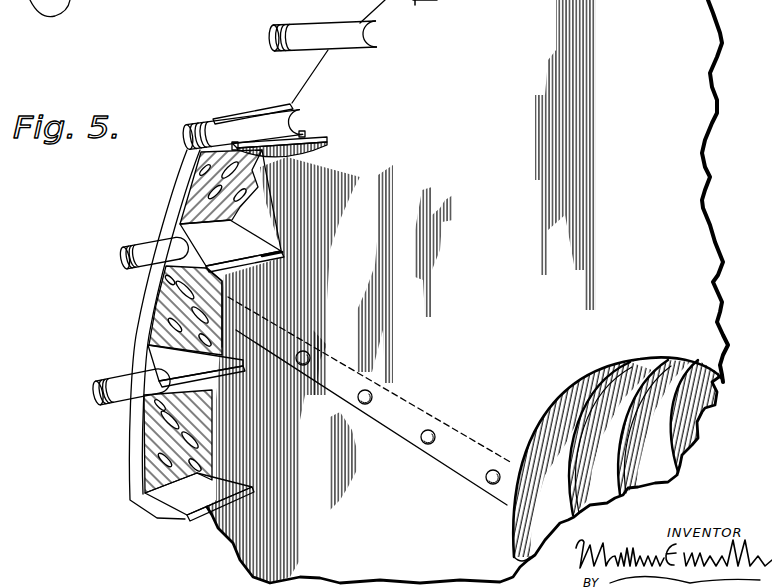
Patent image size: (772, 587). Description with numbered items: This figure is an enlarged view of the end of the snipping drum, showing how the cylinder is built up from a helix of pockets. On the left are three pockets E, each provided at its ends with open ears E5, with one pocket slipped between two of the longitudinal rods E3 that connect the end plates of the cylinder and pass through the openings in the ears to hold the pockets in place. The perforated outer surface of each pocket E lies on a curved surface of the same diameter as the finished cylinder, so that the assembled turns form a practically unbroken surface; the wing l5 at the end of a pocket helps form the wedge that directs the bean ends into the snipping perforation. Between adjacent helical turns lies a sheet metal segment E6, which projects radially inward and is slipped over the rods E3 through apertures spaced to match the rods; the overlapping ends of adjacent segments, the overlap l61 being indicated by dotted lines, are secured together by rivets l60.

The pocket E is at (180, 175).
The longitudinal rod E3 is at (179, 132).
The ear E5 is at (304, 134).
The sheet metal segment E6 is at (583, 370).
The pocket plate l5 is at (232, 283).
The bolts l60 is at (430, 429).
The strip l61 is at (283, 254).